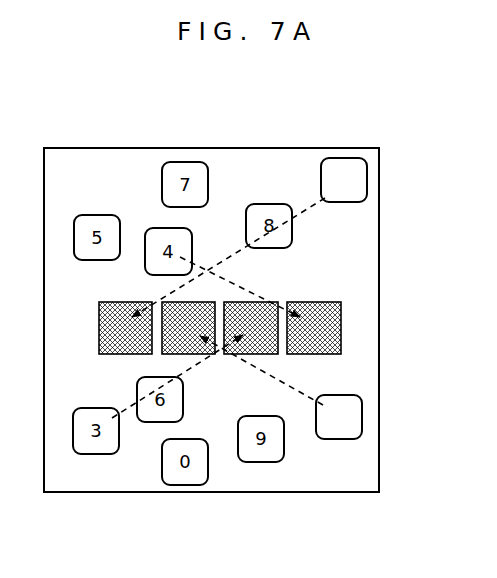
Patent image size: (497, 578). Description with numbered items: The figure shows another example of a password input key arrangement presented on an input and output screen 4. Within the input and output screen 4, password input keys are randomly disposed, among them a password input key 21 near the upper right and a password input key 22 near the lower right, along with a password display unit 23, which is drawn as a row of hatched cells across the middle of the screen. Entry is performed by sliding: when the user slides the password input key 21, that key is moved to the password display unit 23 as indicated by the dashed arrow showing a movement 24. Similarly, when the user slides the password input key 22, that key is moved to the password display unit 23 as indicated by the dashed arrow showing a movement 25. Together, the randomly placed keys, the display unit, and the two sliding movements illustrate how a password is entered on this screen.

The input and output screen 4 is at (128, 492).
The password input key 21 is at (367, 177).
The password input key 22 is at (362, 414).
The password display unit 23 is at (341, 316).
The movement 24 is at (305, 212).
The movement 25 is at (295, 388).